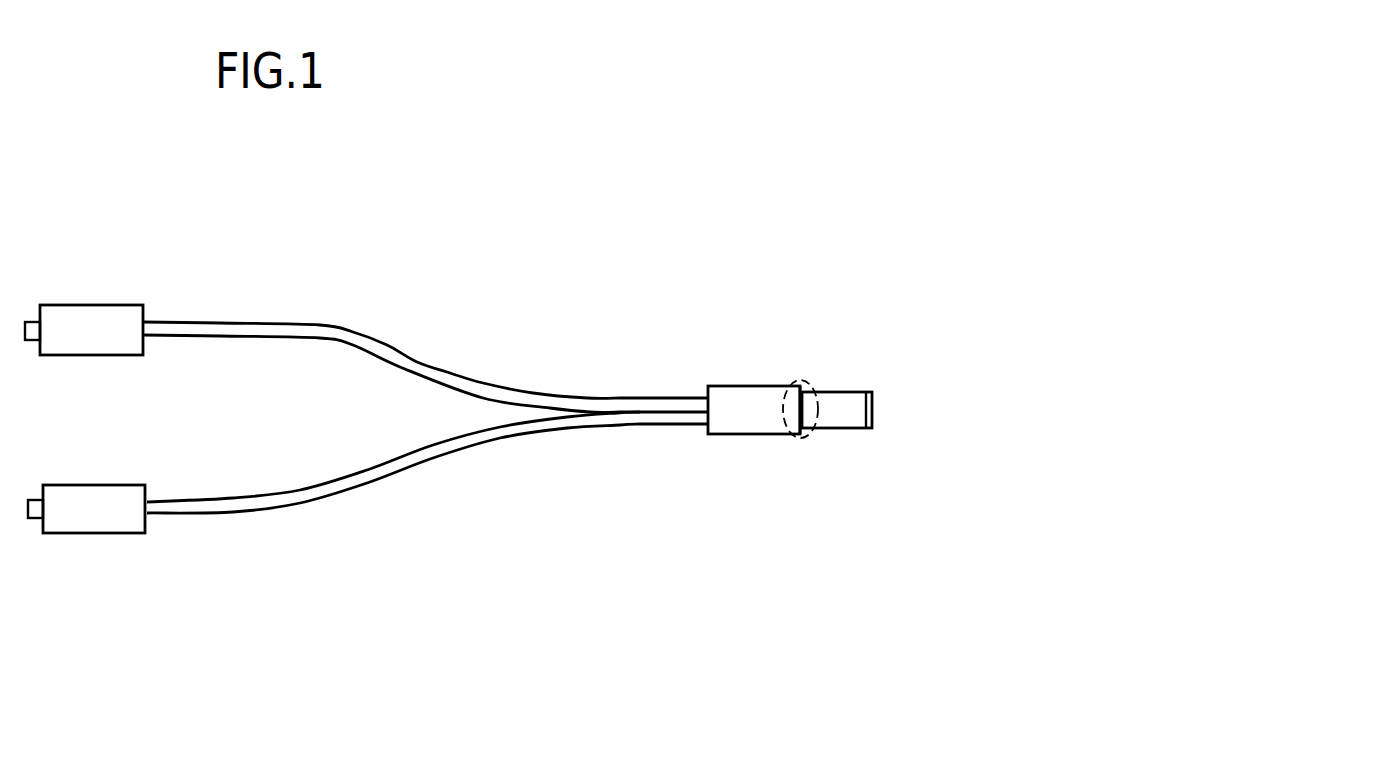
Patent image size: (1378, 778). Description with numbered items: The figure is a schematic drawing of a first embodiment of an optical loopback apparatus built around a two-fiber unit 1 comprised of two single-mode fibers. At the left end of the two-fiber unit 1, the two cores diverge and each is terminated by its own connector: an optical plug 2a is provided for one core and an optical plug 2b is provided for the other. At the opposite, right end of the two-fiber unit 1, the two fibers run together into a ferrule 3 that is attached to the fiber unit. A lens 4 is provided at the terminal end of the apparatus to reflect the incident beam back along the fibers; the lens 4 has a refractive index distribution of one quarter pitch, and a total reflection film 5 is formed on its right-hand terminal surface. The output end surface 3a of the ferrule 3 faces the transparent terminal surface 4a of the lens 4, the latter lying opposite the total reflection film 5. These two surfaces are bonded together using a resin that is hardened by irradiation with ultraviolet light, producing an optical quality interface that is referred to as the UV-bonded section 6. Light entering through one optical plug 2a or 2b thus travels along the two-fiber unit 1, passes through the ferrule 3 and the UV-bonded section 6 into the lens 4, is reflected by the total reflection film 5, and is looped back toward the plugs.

The two-fiber unit 1 is at (638, 424).
The optical plug 2a is at (117, 355).
The optical plug 2b is at (117, 533).
The ferrule 3 is at (728, 387).
The output end surface 3a is at (798, 419).
The lens 4 is at (835, 428).
The transparent terminal surface 4a is at (802, 400).
The total reflection film 5 is at (873, 396).
The UV-bonded section 6 is at (803, 440).